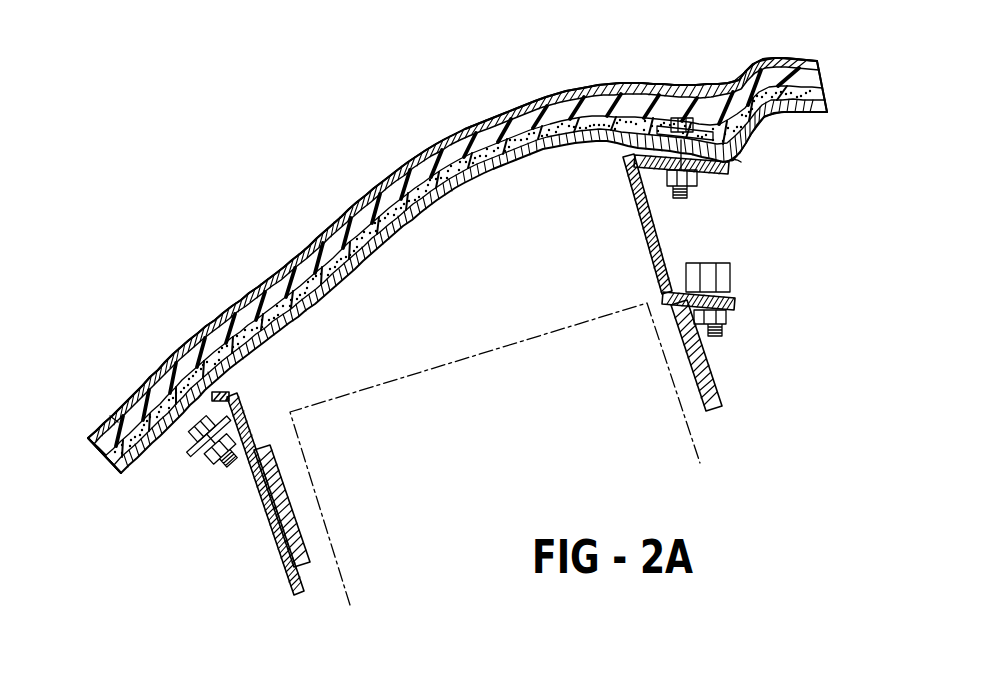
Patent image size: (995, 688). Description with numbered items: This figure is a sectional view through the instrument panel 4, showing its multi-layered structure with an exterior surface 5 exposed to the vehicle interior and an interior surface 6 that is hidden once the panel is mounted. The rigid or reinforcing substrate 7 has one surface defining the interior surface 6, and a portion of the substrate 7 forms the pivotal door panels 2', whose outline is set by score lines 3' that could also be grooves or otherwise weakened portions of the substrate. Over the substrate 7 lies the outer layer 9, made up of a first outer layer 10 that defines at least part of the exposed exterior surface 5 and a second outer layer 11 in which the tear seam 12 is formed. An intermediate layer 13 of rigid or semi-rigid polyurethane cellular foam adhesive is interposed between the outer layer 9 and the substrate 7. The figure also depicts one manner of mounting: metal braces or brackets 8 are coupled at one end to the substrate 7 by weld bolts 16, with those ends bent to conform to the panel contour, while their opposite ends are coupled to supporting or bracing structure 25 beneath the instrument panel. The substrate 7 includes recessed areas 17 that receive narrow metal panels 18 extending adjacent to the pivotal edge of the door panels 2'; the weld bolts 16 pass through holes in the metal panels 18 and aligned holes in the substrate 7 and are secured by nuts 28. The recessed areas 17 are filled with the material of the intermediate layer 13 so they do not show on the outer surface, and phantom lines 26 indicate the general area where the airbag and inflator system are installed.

The panel 4 is at (623, 75).
The exterior surface 5 is at (232, 306).
The tear seam 12 is at (437, 167).
The score lines 3' is at (469, 275).
The interior surface 6 is at (310, 305).
The door panels 2' is at (457, 267).
The outer layer 9 is at (838, 57).
The first outer layer 10 is at (88, 443).
The second outer layer 11 is at (94, 456).
The intermediate layer 13 is at (108, 462).
The substrate 7 is at (128, 471).
The metal panels 18 is at (707, 137).
The weld bolts 16 is at (683, 127).
The recessed areas 17 is at (737, 158).
The nuts 28 is at (700, 180).
The metal braces or brackets 8 is at (653, 277).
The supporting or bracing structure 25 is at (306, 582).
The phantom lines 26 is at (400, 377).